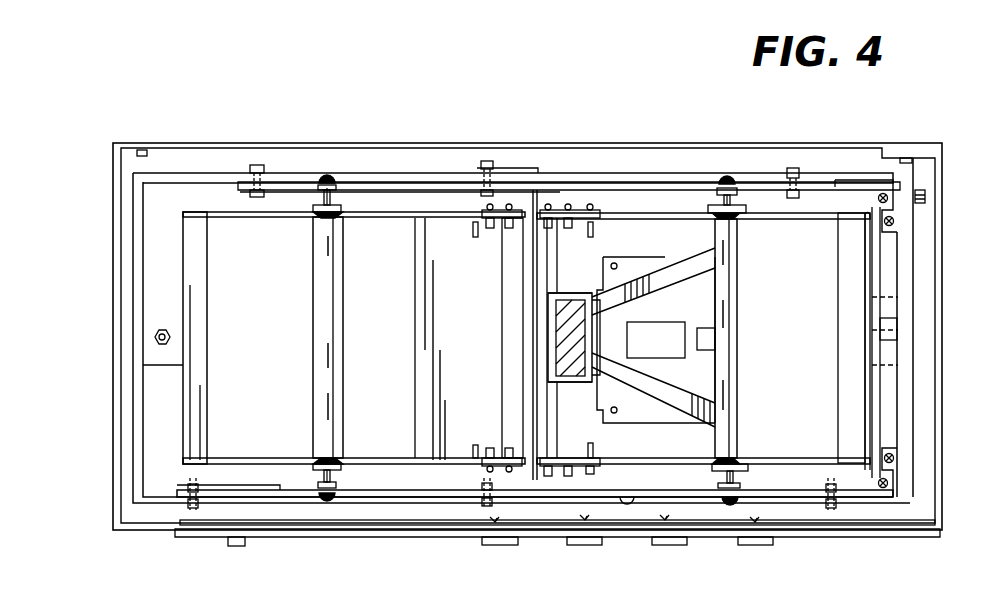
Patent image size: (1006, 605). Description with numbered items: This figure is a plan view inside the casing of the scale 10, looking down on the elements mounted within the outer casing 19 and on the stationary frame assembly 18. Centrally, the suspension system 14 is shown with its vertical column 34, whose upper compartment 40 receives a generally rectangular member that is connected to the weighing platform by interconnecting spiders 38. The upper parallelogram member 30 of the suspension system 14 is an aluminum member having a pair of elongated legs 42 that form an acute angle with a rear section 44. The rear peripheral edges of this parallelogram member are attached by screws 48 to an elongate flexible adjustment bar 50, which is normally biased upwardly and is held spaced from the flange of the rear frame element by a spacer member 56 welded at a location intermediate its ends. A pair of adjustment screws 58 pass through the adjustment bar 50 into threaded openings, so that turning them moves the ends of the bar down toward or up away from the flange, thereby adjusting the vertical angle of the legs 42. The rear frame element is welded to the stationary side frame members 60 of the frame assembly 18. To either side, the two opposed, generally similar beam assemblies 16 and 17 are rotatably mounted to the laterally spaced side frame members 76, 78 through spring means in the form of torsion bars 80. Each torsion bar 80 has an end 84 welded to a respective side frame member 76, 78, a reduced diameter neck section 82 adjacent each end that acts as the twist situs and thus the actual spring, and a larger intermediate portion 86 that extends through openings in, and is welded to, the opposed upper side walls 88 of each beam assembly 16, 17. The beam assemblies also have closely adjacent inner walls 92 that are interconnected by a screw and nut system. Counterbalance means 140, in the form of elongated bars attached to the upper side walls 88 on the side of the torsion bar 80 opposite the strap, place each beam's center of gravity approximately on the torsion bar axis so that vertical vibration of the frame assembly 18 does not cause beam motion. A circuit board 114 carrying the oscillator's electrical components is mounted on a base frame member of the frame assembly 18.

The scale 10 is at (258, 126).
The suspension system 14 is at (673, 236).
The beam assembly 16 is at (417, 211).
The beam assembly 17 is at (662, 205).
The stationary frame assembly 18 is at (562, 172).
The outer casing 19 is at (948, 200).
The upper parallelogram member 30 is at (902, 318).
The vertical column 34 is at (562, 384).
The spider 38 is at (563, 320).
The upper compartment 40 is at (563, 360).
The elongated legs 42 is at (787, 235).
The rear section 44 is at (885, 417).
The screws 48 is at (833, 213).
The flexible adjustment bar 50 is at (908, 447).
The spacer member 56 is at (897, 343).
The adjustment screws 58 is at (894, 221).
The side frame members 60 is at (866, 173).
The side frame member 76 is at (785, 170).
The side frame member 78 is at (752, 494).
The torsion bar 80 is at (306, 317).
The reduced diameter neck section 82 is at (330, 206).
The end 84 is at (325, 204).
The intermediate portion 86 is at (322, 358).
The upper side walls 88 is at (393, 218).
The inner walls 92 is at (533, 270).
The circuit board 114 is at (822, 289).
The counterbalance means 140 is at (200, 292).